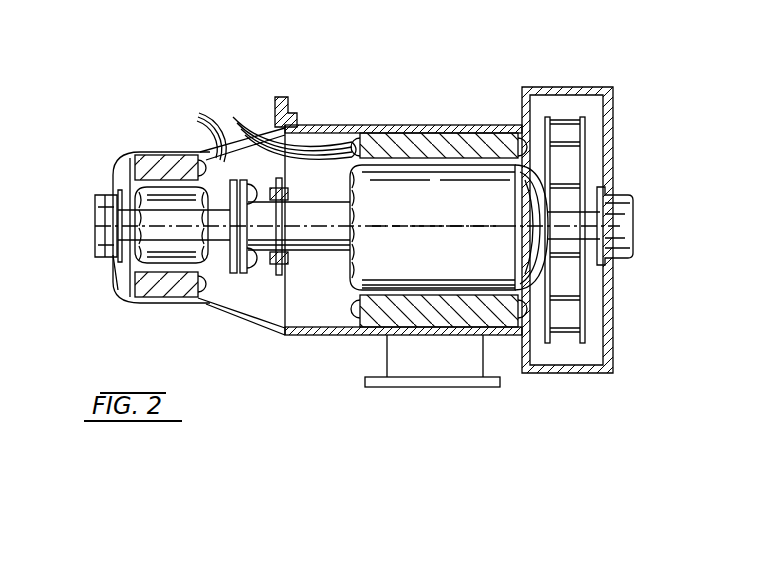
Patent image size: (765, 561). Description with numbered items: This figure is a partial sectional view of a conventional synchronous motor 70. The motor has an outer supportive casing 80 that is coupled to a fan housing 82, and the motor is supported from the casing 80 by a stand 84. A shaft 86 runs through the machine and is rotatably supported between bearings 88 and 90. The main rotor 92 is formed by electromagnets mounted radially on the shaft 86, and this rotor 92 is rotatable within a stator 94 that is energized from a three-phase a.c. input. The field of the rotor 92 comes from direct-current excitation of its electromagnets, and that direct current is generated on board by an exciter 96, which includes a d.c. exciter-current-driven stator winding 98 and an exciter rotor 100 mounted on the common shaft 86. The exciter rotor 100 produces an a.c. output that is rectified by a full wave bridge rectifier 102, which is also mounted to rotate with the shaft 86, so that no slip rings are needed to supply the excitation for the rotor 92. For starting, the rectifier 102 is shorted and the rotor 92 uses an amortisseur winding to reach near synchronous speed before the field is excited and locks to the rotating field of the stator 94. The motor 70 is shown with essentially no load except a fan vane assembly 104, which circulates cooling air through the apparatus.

The synchronous motor 70 is at (458, 78).
The outer supportive casing 80 is at (385, 125).
The fan housing 82 is at (613, 132).
The stand 84 is at (387, 356).
The shaft 86 is at (307, 238).
The bearing 88 is at (96, 214).
The bearing 90 is at (628, 216).
The rotor 92 is at (358, 275).
The stator 94 is at (461, 140).
The exciter 96 is at (97, 268).
The stator winding 98 is at (161, 160).
The rotor 100 is at (118, 255).
The full wave bridge rectifier 102 is at (258, 268).
The fan vane assembly 104 is at (570, 115).